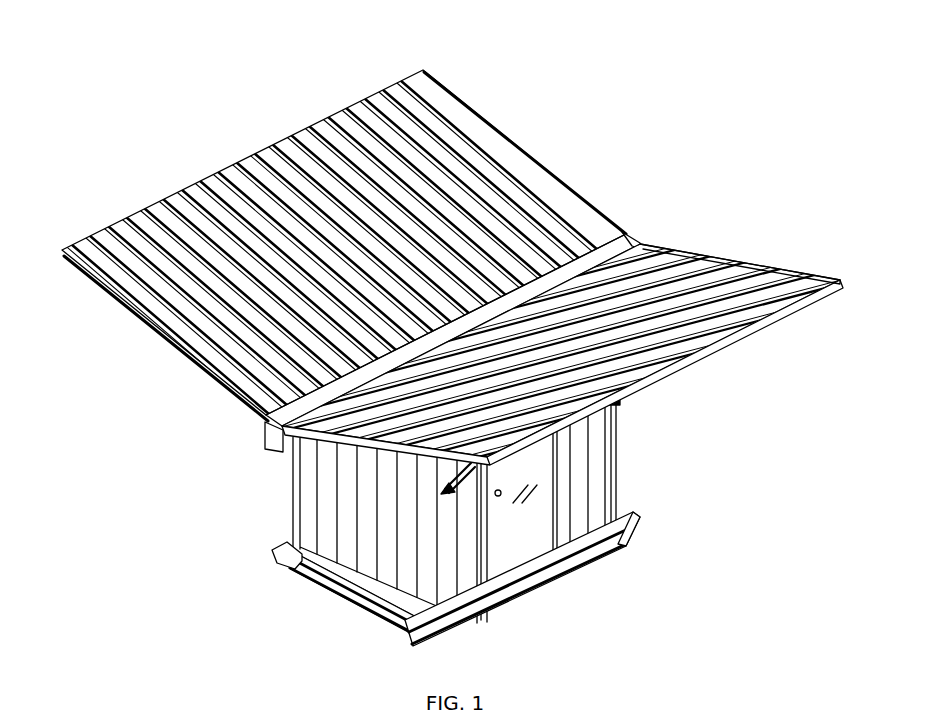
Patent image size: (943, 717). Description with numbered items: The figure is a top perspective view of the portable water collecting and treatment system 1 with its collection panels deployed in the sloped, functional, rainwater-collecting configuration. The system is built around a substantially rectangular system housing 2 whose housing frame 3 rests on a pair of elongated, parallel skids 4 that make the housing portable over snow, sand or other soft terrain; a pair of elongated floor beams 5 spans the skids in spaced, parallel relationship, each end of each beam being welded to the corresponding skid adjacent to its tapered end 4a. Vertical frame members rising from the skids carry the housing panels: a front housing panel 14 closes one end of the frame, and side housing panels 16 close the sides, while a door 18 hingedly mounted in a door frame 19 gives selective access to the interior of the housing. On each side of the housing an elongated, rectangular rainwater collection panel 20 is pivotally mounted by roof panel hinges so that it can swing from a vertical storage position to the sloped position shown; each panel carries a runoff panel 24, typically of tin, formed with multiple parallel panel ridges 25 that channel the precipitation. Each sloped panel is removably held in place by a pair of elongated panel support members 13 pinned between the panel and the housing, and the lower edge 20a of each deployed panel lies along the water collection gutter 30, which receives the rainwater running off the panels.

The portable water collecting and treatment system 1 is at (259, 78).
The system housing 2 is at (457, 520).
The housing frame 3 is at (434, 590).
The skids 4 is at (428, 603).
The tapered end 4a is at (283, 560).
The floor beams 5 is at (392, 597).
The panel support members 13 is at (482, 477).
The front housing panel 14 is at (350, 567).
The side housing panels 16 is at (598, 465).
The door 18 is at (513, 553).
The door frame 19 is at (556, 515).
The rainwater collection panel 20 is at (395, 262).
The lower edge 20a is at (628, 240).
The runoff panel 24 is at (351, 262).
The panel ridges 25 is at (233, 160).
The water collection gutter 30 is at (270, 432).